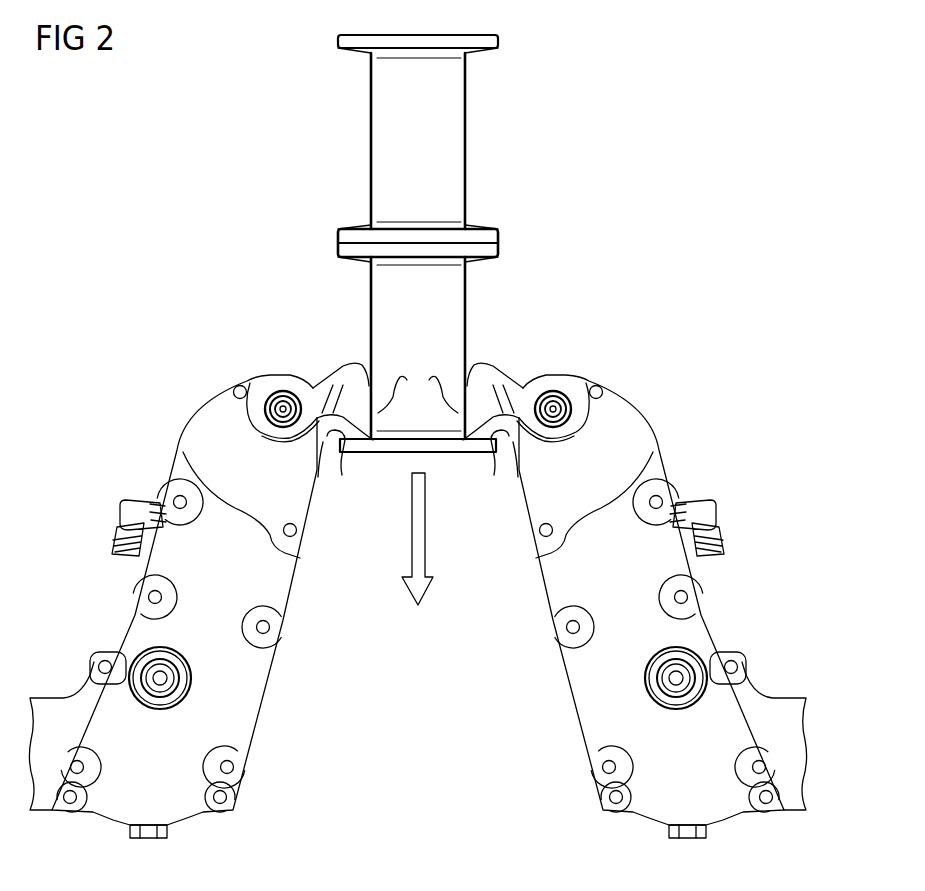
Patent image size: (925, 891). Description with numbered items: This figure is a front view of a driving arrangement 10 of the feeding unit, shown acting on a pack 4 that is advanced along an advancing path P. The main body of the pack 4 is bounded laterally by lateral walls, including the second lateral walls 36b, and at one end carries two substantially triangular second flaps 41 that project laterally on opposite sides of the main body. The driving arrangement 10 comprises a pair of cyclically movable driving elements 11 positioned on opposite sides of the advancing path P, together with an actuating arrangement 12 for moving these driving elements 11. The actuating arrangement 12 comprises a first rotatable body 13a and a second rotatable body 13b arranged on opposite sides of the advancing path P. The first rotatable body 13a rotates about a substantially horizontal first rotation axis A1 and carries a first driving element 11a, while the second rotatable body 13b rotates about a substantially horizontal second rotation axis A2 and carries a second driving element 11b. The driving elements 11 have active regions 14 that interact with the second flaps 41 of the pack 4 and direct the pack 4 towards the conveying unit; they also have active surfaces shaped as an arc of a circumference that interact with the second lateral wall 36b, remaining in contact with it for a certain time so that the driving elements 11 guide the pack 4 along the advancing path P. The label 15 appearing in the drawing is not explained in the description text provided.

The pack 4 is at (385, 148).
The second lateral wall 36b is at (371, 287).
The recess 15 is at (418, 391).
The active region 14 is at (360, 455).
The second flap 41 is at (342, 468).
The advancing path P is at (421, 550).
The driving element 11 is at (201, 550).
The first rotatable body 13a is at (273, 396).
The first rotation axis A1 is at (266, 430).
The first driving element 11a is at (352, 372).
The driving arrangement 10 is at (635, 580).
The actuating arrangement 12 is at (690, 483).
The second rotatable body 13b is at (564, 396).
The second rotation axis A2 is at (570, 430).
The second driving element 11b is at (486, 370).